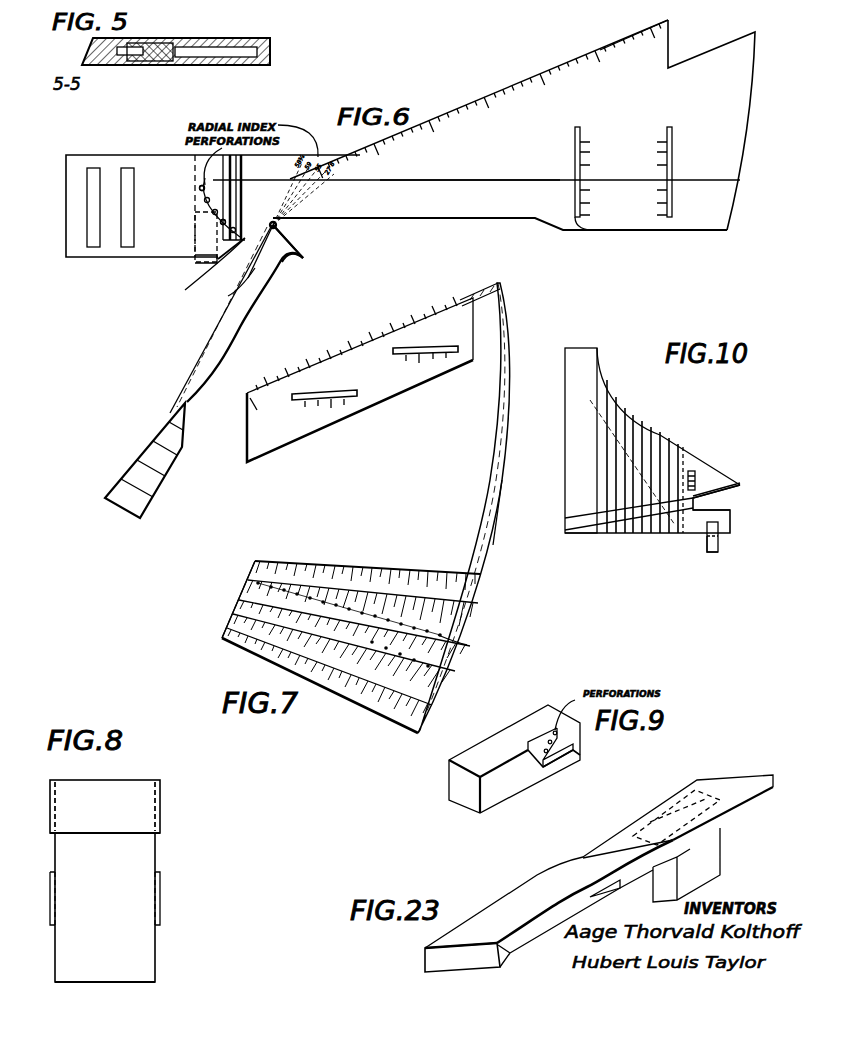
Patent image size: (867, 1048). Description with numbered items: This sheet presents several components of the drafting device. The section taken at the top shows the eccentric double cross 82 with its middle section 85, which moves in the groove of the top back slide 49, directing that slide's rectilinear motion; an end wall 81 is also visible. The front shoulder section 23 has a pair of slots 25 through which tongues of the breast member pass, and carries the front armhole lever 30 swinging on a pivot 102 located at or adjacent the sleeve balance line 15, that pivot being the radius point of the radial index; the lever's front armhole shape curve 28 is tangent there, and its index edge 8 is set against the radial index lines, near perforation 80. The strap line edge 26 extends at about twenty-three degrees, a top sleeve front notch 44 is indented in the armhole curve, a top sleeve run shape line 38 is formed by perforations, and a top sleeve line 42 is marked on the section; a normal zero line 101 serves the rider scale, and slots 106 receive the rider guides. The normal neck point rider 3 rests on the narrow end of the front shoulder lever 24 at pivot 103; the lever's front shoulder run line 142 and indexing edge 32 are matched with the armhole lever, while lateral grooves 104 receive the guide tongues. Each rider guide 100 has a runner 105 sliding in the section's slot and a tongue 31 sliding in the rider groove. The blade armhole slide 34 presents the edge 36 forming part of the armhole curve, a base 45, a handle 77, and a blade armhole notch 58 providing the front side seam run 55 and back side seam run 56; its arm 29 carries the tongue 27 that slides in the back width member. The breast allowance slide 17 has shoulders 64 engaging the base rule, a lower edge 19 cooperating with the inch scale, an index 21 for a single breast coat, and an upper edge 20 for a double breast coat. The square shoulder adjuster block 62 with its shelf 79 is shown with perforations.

In FIG. 5, the eccentric double cross 82 is at (130, 56).
In FIG. 5, the middle section 85 is at (158, 56).
In FIG. 5, the top back slide 49 is at (205, 57).
In FIG. 5, the end wall 81 is at (258, 56).
In FIG. 6, the slots 25 is at (115, 210).
In FIG. 6, the radial index perforation 80 is at (200, 207).
In FIG. 6, the top sleeve run shape line 38 is at (227, 222).
In FIG. 6, the strap line edge 26 is at (455, 108).
In FIG. 6, the front shoulder section 23 is at (620, 75).
In FIG. 6, the top sleeve line 42 is at (487, 182).
In FIG. 6, the normal zero line 101 is at (627, 178).
In FIG. 6, the longitudinally extending groove or slot 106 is at (578, 222).
In FIG. 6, the sleeve balance line 15 is at (705, 231).
In FIG. 6, the hinge or pivot 102 is at (278, 227).
In FIG. 6, the index edge 8 is at (292, 238).
In FIG. 6, the top sleeve front notch 44 is at (199, 273).
In FIG. 6, the front armhole shape line or curve portion 28 is at (227, 287).
In FIG. 6, the front armhole lever 30 is at (228, 345).
In FIG. 7, the normal neck point rider 3 is at (263, 440).
In FIG. 7, the laterally extending groove 104 is at (375, 377).
In FIG. 7, the hinge or pivot 103 is at (499, 285).
In FIG. 7, the front shoulder lever 24 is at (397, 585).
In FIG. 7, the indexing edge 32 is at (240, 595).
In FIG. 7, the front shoulder run line or curve portion 142 is at (490, 595).
In FIG. 10, the blade armhole member or slide 34 is at (578, 360).
In FIG. 10, the edge 36 is at (664, 435).
In FIG. 10, the base 45 is at (630, 533).
In FIG. 10, the handle 77 is at (697, 478).
In FIG. 10, the front side seam run 55 is at (700, 497).
In FIG. 10, the blade armhole notch 58 is at (700, 493).
In FIG. 10, the back side seam run 56 is at (703, 504).
In FIG. 10, the guide or arm 29 is at (715, 535).
In FIG. 10, the tongue 27 is at (708, 551).
In FIG. 8, the upper edge 20 is at (147, 781).
In FIG. 8, the breast allowance member or slide 17 is at (130, 940).
In FIG. 8, the shoulders 64 is at (155, 797).
In FIG. 8, the index 21 is at (140, 836).
In FIG. 8, the lower edge 19 is at (108, 983).
In FIG. 9, the block 62 is at (462, 780).
In FIG. 9, the shelf 79 is at (566, 754).
In FIG. 23, the tongue 31 is at (503, 968).
In FIG. 23, the rider guide 100 is at (740, 785).
In FIG. 23, the runner 105 is at (710, 858).